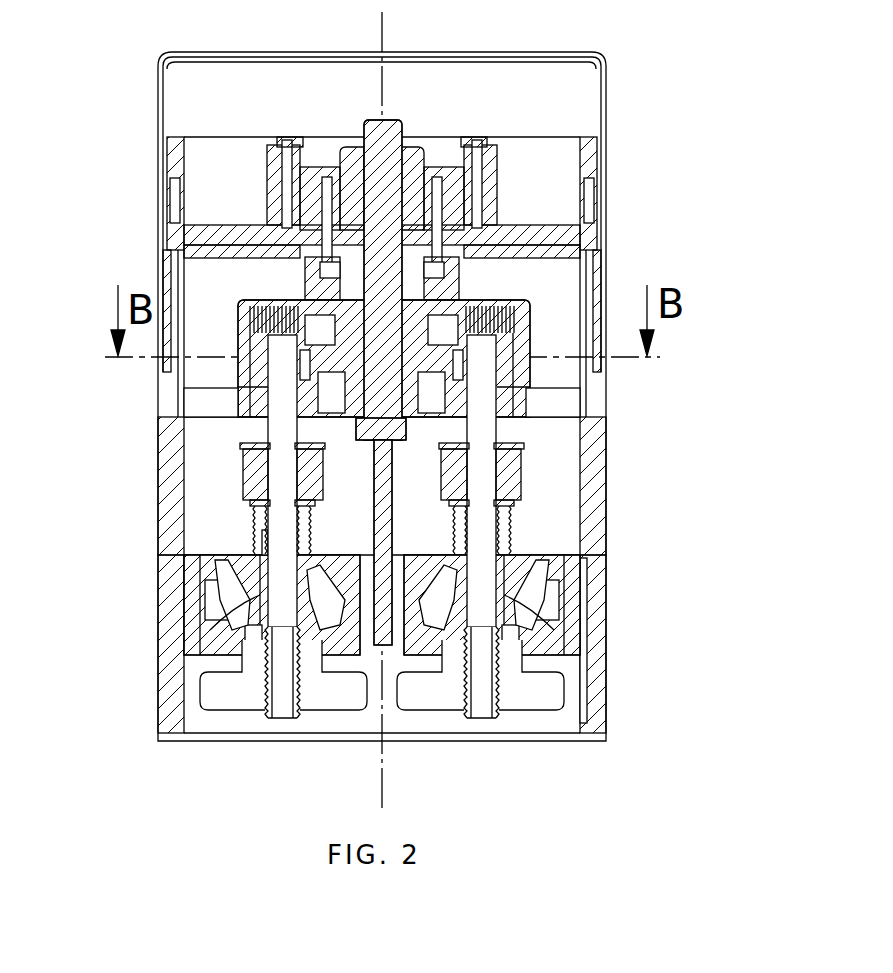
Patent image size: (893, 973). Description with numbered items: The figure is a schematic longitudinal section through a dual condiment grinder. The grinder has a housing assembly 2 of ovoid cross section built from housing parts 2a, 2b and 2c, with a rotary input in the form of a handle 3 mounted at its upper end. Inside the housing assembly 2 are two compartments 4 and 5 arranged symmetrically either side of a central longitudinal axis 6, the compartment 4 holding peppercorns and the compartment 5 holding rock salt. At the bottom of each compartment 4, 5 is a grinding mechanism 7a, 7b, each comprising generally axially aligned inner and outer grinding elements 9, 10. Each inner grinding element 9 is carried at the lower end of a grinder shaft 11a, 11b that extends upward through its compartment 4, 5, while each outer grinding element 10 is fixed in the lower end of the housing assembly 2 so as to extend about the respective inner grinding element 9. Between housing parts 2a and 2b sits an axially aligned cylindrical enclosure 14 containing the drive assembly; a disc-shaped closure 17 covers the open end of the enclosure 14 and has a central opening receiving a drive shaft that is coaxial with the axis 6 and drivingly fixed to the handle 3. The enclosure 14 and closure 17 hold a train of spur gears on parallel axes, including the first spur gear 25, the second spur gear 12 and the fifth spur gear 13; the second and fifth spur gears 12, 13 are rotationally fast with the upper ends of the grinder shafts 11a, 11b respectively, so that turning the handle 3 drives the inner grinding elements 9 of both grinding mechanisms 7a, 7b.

The housing assembly 2 is at (668, 440).
The housing part 2a is at (606, 292).
The housing part 2b is at (593, 497).
The housing part 2c is at (598, 672).
The handle 3 is at (605, 102).
The compartment 4 is at (261, 498).
The compartment 5 is at (494, 498).
The central longitudinal axis 6 is at (383, 755).
The grinding mechanism 7a is at (240, 722).
The grinding mechanism 7b is at (527, 718).
The inner grinding element 9 is at (255, 597).
The outer grinding element 10 is at (215, 588).
The grinder shaft 11a is at (278, 540).
The grinder shaft 11b is at (478, 553).
The second spur gear 12 is at (248, 378).
The fifth spur gear 13 is at (512, 358).
The cylindrical enclosure 14 is at (245, 408).
The disc-shaped closure 17 is at (250, 302).
The first spur gear 25 is at (358, 398).